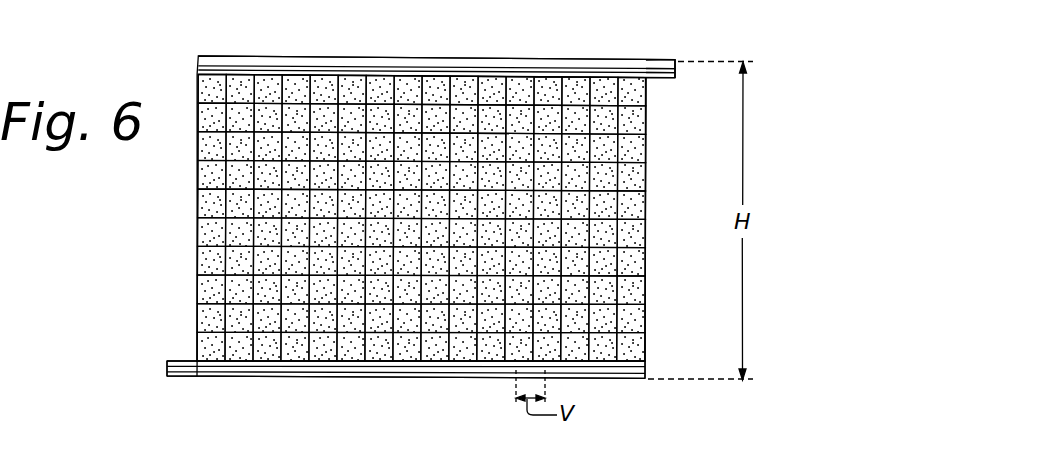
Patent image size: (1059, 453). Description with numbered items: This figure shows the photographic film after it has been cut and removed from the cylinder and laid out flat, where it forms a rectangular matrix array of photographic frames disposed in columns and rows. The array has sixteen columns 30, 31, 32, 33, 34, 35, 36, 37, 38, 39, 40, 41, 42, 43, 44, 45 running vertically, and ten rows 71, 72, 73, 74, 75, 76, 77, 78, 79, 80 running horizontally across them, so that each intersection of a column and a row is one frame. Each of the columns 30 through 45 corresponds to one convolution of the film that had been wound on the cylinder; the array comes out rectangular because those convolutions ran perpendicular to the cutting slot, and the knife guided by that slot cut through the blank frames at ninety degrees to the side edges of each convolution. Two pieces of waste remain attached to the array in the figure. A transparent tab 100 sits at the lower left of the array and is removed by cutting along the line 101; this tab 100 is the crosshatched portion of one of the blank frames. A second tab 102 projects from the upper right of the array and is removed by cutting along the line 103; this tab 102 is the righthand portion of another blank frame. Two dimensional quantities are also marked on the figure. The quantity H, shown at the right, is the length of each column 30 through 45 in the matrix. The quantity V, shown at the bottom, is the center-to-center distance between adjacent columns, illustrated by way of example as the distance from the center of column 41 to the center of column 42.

The column 30 is at (212, 57).
The column 31 is at (240, 57).
The column 32 is at (268, 58).
The column 33 is at (296, 58).
The column 34 is at (324, 58).
The column 35 is at (352, 58).
The column 36 is at (380, 58).
The column 37 is at (408, 59).
The column 38 is at (436, 59).
The column 39 is at (464, 59).
The column 40 is at (492, 59).
The column 41 is at (520, 60).
The column 42 is at (548, 60).
The column 43 is at (576, 60).
The column 44 is at (604, 60).
The column 45 is at (632, 60).
The row 71 is at (197, 87).
The row 72 is at (197, 117).
The row 73 is at (197, 146).
The row 74 is at (197, 176).
The row 75 is at (197, 205).
The row 76 is at (197, 233).
The row 77 is at (197, 262).
The row 78 is at (197, 291).
The row 79 is at (197, 319).
The row 80 is at (197, 346).
The transparent tab 100 is at (158, 377).
The cutting line 101 is at (193, 374).
The tab 102 is at (684, 74).
The cutting line 103 is at (650, 76).